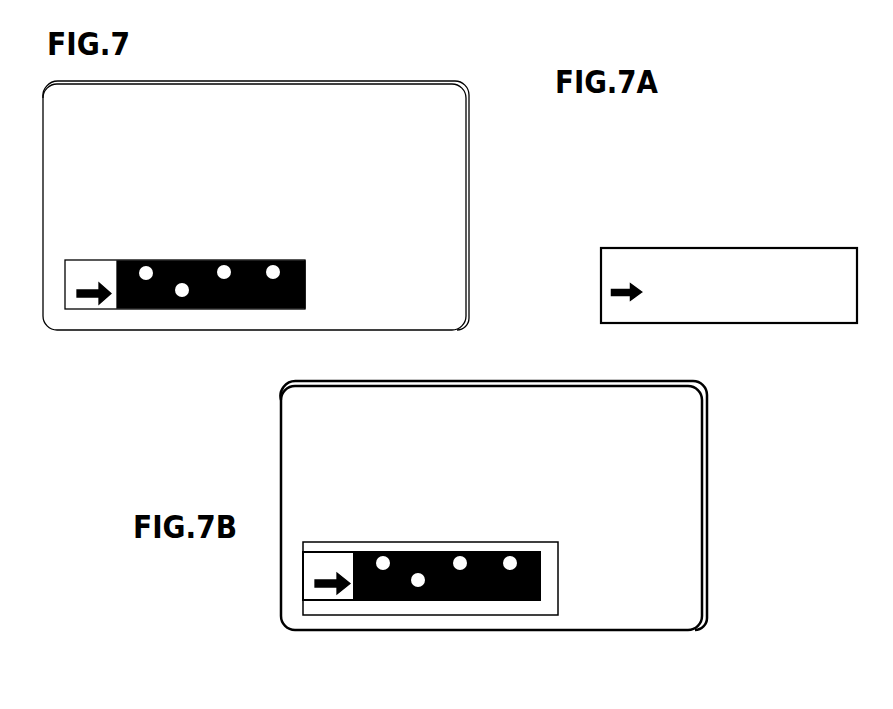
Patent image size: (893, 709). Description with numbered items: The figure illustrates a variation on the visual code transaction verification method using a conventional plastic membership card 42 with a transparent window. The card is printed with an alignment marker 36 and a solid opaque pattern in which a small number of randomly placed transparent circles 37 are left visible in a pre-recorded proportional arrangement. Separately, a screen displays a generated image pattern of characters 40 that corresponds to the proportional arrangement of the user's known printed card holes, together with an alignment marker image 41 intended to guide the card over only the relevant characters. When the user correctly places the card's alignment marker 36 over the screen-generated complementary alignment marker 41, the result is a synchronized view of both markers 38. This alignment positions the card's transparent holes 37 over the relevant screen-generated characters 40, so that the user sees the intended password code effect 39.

In FIG. 7, the alignment marker 36 is at (80, 296).
In FIG. 7, the transparent circles 37 is at (247, 308).
In FIG. 7B, the synchronized view of both markers 38 is at (327, 588).
In FIG. 7B, the password code effect 39 is at (431, 603).
In FIG. 7A, the screen generated image pattern of characters 40 is at (845, 315).
In FIG. 7B, the screen generated image pattern of characters 40 is at (553, 604).
In FIG. 7A, the alignment marker image 41 is at (604, 292).
In FIG. 7, the plastic membership card 42 is at (445, 113).